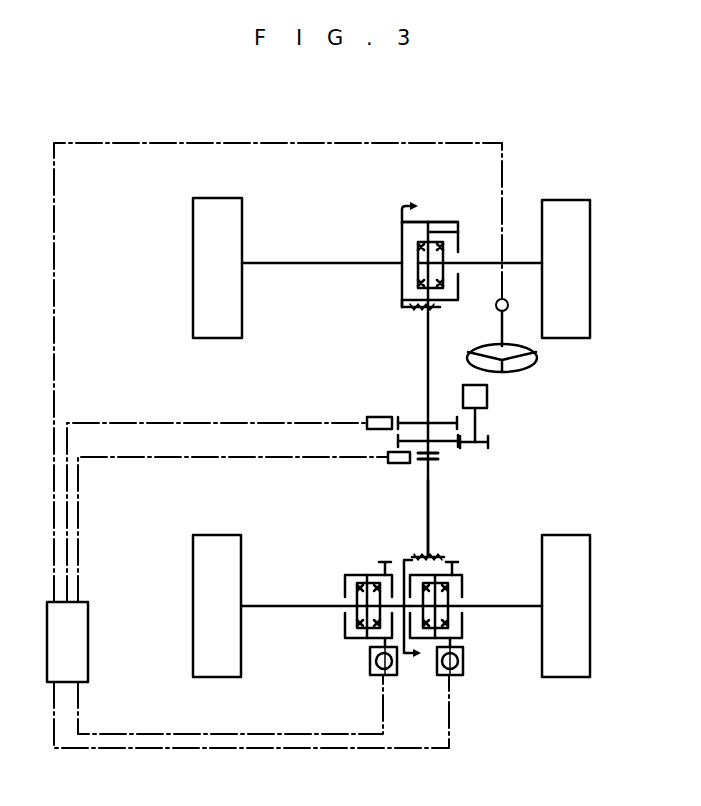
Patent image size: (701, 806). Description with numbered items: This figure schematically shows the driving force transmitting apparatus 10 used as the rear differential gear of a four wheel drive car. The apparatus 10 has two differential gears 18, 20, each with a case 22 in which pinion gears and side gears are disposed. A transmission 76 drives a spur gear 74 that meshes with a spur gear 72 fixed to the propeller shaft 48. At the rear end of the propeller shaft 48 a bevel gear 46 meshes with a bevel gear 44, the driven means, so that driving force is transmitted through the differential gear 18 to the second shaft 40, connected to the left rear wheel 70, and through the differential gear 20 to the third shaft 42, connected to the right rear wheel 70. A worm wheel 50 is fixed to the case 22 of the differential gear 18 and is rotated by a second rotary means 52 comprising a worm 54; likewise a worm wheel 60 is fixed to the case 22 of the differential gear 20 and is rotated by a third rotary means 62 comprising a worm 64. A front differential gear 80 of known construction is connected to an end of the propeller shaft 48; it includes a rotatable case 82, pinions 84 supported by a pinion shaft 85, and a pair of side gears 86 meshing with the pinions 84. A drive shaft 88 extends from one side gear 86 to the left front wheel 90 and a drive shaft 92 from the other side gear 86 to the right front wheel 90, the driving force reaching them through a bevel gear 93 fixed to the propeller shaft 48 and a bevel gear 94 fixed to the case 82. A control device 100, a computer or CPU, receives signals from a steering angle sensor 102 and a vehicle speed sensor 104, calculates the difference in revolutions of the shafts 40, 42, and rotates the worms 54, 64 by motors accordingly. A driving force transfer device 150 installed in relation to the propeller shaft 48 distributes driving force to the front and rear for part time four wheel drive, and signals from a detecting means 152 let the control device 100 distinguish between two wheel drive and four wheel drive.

The driving force transmitting apparatus 10 is at (405, 553).
The differential gear 18 is at (337, 578).
The differential gear 20 is at (476, 574).
The case 22 is at (356, 575).
The second shaft 40 is at (268, 606).
The third shaft 42 is at (504, 606).
The bevel gear 44 is at (406, 658).
The bevel gear 46 is at (434, 553).
The propeller shaft 48 is at (432, 490).
The worm wheel 50 is at (384, 561).
The second rotary means 52 is at (360, 661).
The worm 54 is at (378, 676).
The worm wheel 60 is at (454, 561).
The third rotary means 62 is at (470, 661).
The worm 64 is at (455, 676).
The rear wheels 70 is at (226, 535).
The spur gear 72 is at (398, 444).
The spur gear 74 is at (478, 440).
The transmission 76 is at (487, 397).
The front differential gear 80 is at (446, 216).
The rotatable case 82 is at (418, 222).
The pinions 84 is at (437, 242).
The pinion shaft 85 is at (440, 230).
The side gears 86 is at (443, 262).
The drive shaft 88 is at (300, 262).
The front wheels 90 is at (230, 198).
The drive shaft 92 is at (512, 294).
The bevel gear 93 is at (420, 312).
The bevel gear 94 is at (402, 309).
The control device 100 is at (90, 630).
The steering angle sensor 102 is at (497, 309).
The vehicle speed sensor 104 is at (378, 417).
The driving force transfer device 150 is at (440, 458).
The detecting means 152 is at (395, 463).